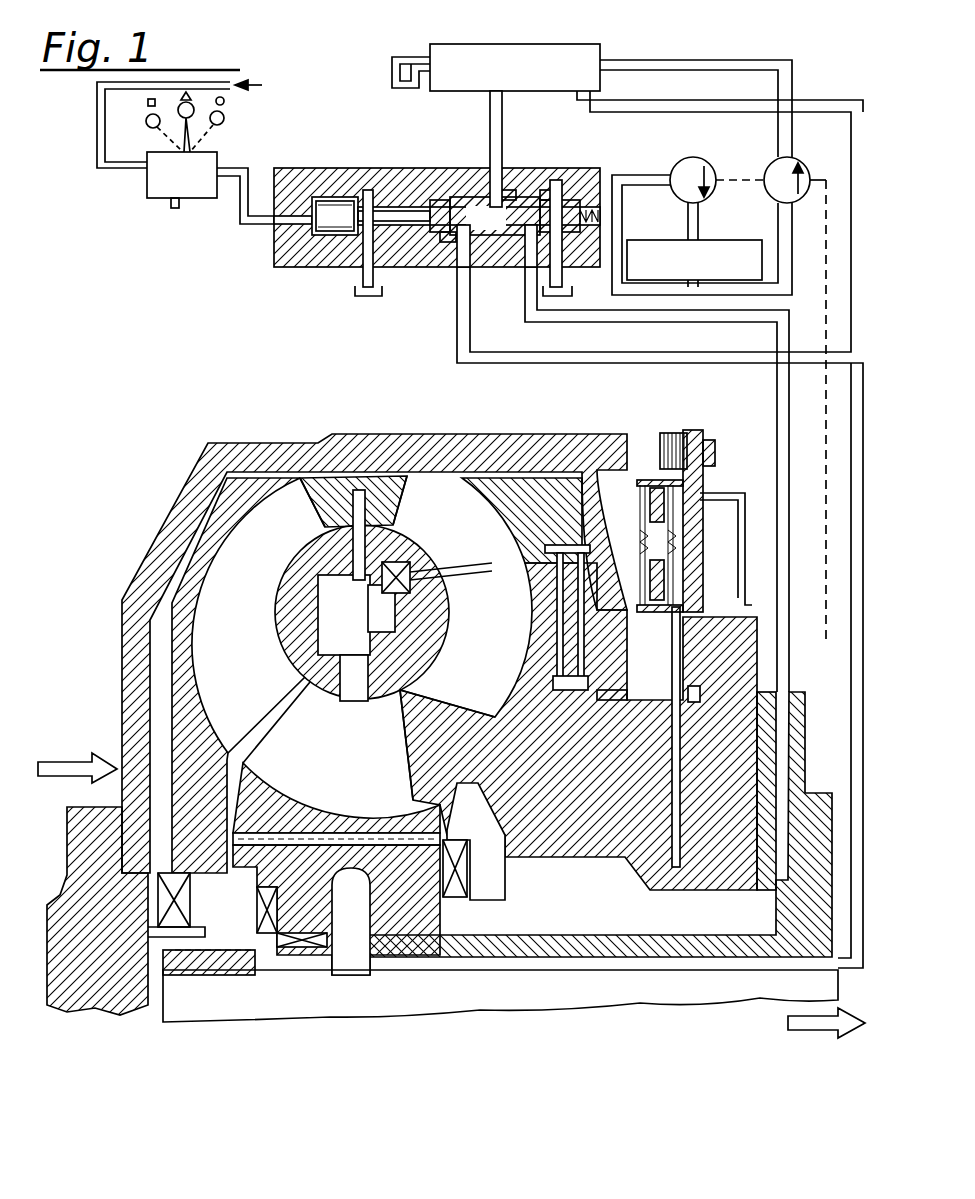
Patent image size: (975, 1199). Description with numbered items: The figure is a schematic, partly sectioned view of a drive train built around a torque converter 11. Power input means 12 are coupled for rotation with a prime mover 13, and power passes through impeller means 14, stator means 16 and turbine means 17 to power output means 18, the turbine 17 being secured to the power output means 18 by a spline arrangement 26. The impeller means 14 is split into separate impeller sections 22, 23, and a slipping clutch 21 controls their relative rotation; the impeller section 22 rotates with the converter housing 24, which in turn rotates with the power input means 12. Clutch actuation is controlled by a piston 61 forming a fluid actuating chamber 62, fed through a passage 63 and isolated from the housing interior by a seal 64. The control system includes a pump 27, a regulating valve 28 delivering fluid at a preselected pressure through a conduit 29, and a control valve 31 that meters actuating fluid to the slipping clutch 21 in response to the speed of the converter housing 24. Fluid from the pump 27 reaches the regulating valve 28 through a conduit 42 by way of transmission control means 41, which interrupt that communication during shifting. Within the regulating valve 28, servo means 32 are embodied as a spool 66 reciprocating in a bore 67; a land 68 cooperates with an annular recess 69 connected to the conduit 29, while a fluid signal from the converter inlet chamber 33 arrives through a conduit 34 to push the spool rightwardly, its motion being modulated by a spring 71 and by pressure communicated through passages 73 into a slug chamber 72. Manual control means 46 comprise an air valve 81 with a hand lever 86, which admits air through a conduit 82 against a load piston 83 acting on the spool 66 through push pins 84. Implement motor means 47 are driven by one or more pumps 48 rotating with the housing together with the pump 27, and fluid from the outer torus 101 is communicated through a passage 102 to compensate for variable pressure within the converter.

The torque converter 11 is at (464, 675).
The power input means 12 is at (98, 1012).
The prime mover 13 is at (64, 772).
The impeller means 14 is at (400, 478).
The stator means 16 is at (358, 797).
The turbine means 17 is at (252, 676).
The power output means 18 is at (560, 1015).
The slipping clutch 21 is at (538, 687).
The impeller section 22 is at (500, 697).
The impeller section 23 is at (396, 508).
The converter housing 24 is at (481, 436).
The spline arrangement 26 is at (246, 966).
The pump 27 is at (796, 157).
The regulating valve 28 is at (368, 152).
The conduit 29 is at (777, 386).
The control valve 31 is at (722, 478).
The servo means 32 is at (450, 178).
The inlet chamber 33 is at (470, 778).
The conduit 34 is at (716, 352).
The transmission control means 41 is at (497, 46).
The conduit 42 is at (694, 60).
The manual control means 46 is at (140, 180).
The implement motor means 47 is at (714, 232).
The pump 48 is at (690, 157).
The piston 61 is at (594, 705).
The fluid actuating chamber 62 is at (826, 642).
The passage 63 is at (646, 628).
The seal 64 is at (612, 690).
The spool 66 is at (434, 200).
The bore 67 is at (456, 236).
The land 68 is at (504, 192).
The annular recess 69 is at (546, 192).
The spring 71 is at (586, 200).
The slug chamber 72 is at (520, 222).
The passages 73 is at (497, 250).
The air valve 81 is at (150, 155).
The conduit 82 is at (253, 222).
The load piston 83 is at (322, 196).
The push pins 84 is at (335, 216).
The hand lever 86 is at (207, 143).
The outer torus 101 is at (583, 470).
The passage 102 is at (557, 545).